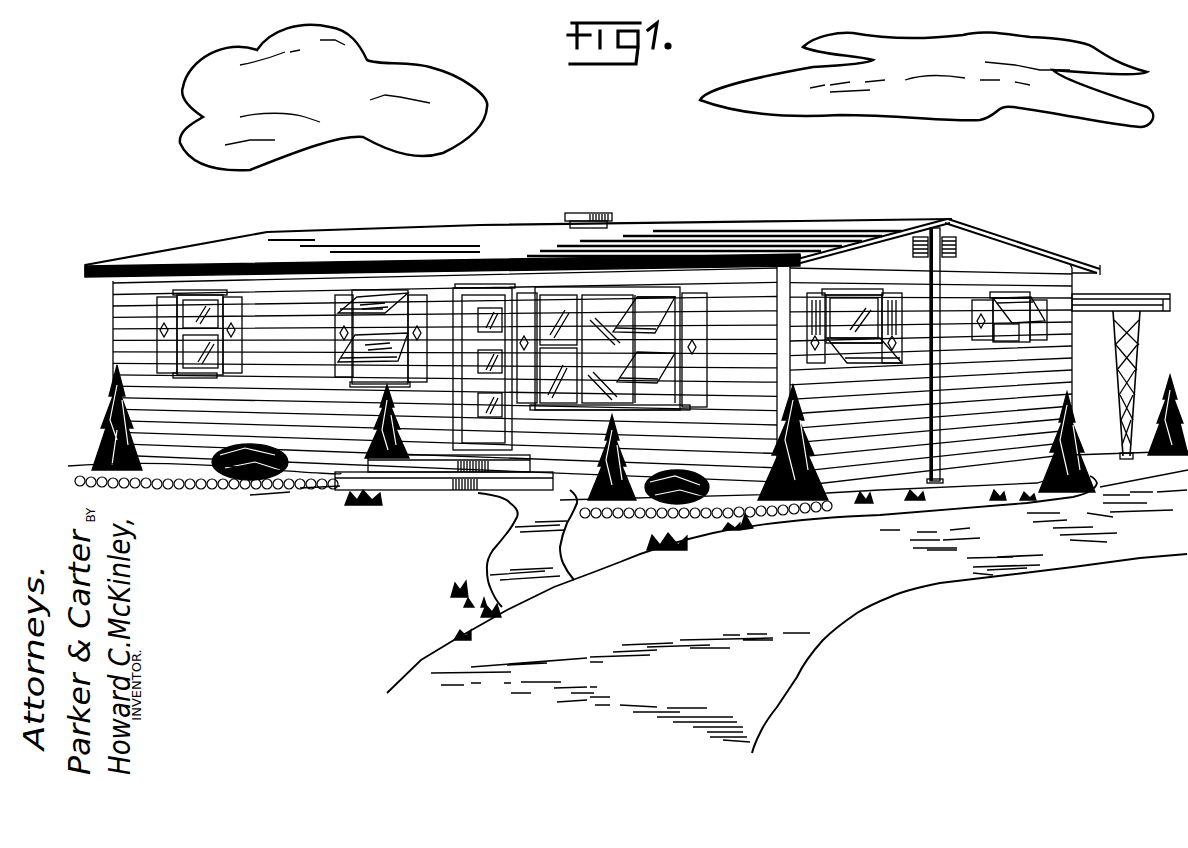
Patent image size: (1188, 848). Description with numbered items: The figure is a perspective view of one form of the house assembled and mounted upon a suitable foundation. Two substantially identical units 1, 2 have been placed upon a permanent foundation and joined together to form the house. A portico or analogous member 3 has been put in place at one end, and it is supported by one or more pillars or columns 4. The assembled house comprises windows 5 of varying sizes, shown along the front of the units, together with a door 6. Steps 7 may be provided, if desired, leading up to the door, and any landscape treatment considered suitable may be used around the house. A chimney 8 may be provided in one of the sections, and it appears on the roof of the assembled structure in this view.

The unit 1 is at (870, 226).
The unit 2 is at (1053, 248).
The portico 3 is at (1132, 297).
The pillar 4 is at (1135, 364).
The window 5 is at (190, 308).
The door 6 is at (485, 298).
The steps 7 is at (428, 487).
The chimney 8 is at (576, 213).